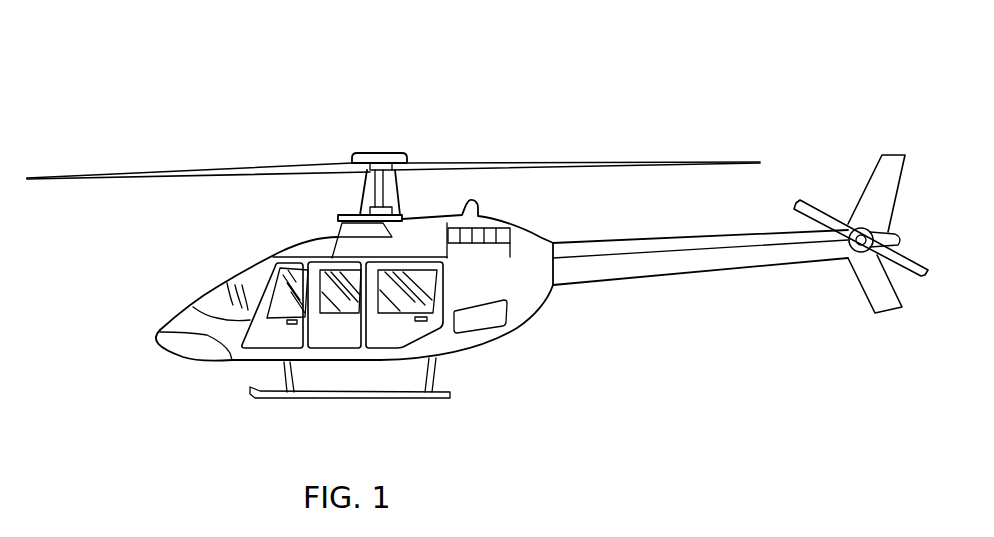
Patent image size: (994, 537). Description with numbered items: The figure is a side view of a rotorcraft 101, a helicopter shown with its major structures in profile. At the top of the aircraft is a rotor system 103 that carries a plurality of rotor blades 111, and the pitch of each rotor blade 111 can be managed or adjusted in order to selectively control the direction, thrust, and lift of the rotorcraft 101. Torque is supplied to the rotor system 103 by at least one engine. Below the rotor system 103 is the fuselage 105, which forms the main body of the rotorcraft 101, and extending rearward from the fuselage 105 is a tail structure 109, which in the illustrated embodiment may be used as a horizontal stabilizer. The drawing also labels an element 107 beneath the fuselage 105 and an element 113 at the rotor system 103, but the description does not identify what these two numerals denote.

The rotorcraft 101 is at (278, 78).
The rotor system 103 is at (382, 143).
The fuselage 105 is at (195, 358).
The landing gear skids 107 is at (355, 398).
The tail structure 109 is at (675, 275).
The rotor blades 111 is at (575, 162).
The rotor mast 113 is at (362, 203).